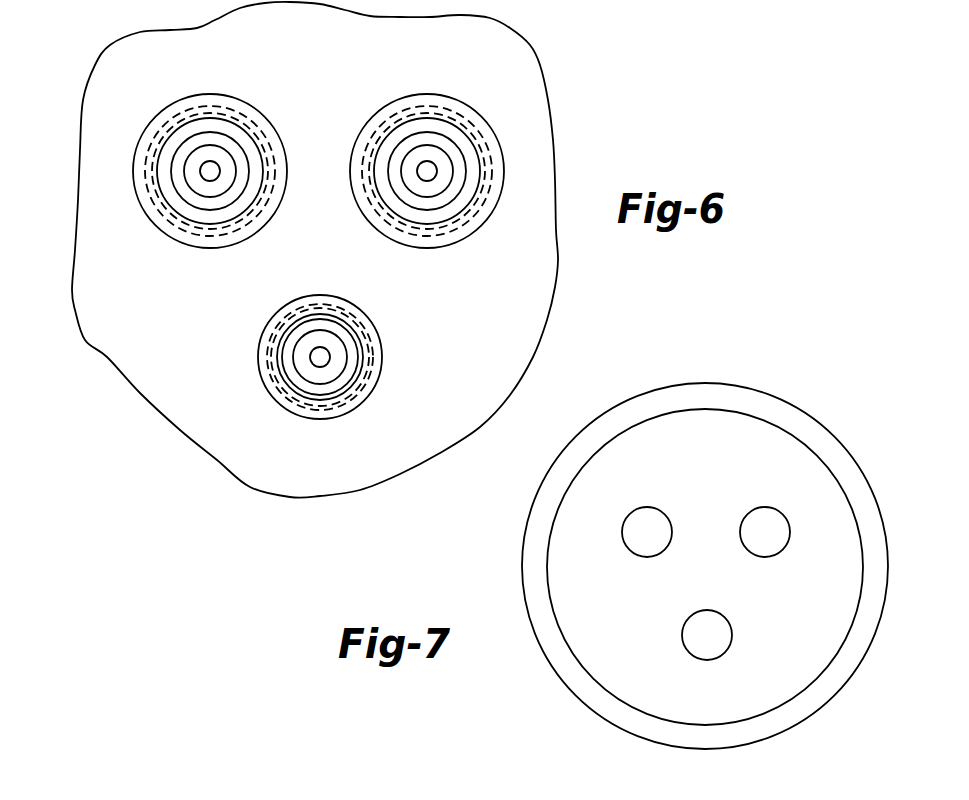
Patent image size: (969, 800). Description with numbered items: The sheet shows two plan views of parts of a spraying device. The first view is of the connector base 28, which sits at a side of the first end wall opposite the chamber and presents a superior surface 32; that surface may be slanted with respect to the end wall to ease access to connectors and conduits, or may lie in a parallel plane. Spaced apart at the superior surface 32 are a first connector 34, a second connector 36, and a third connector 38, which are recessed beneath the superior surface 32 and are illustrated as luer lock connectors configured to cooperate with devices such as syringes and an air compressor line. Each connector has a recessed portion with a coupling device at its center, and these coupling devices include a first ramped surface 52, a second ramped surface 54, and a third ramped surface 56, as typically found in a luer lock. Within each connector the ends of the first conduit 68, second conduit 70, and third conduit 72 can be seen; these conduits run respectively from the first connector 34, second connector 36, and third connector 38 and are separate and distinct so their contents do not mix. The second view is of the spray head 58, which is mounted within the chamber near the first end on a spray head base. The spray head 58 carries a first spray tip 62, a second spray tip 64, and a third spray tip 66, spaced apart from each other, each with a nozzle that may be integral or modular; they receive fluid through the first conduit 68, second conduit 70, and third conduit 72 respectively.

In FIG. 6, the connector base 28 is at (325, 250).
In FIG. 6, the superior surface 32 is at (525, 70).
In FIG. 6, the first connector 34 is at (407, 167).
In FIG. 6, the second connector 36 is at (207, 175).
In FIG. 6, the third connector 38 is at (351, 331).
In FIG. 6, the first ramped surface 52 is at (417, 112).
In FIG. 6, the second ramped surface 54 is at (198, 106).
In FIG. 6, the third ramped surface 56 is at (318, 302).
In FIG. 7, the spray head 58 is at (787, 400).
In FIG. 7, the first spray tip 62 is at (750, 508).
In FIG. 7, the second spray tip 64 is at (657, 507).
In FIG. 7, the third spray tip 66 is at (683, 630).
In FIG. 6, the first conduit 68 is at (456, 190).
In FIG. 6, the second conduit 70 is at (196, 196).
In FIG. 6, the third conduit 72 is at (330, 326).